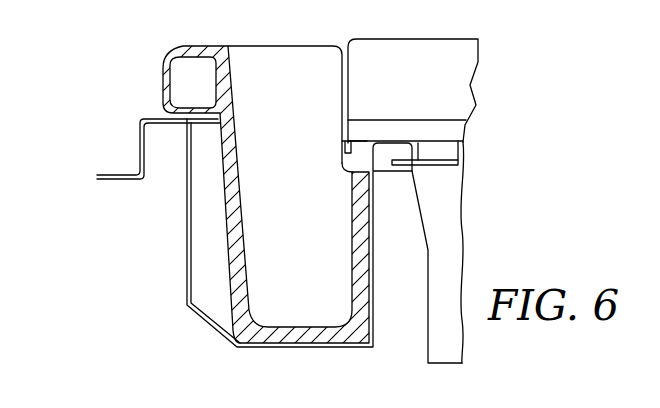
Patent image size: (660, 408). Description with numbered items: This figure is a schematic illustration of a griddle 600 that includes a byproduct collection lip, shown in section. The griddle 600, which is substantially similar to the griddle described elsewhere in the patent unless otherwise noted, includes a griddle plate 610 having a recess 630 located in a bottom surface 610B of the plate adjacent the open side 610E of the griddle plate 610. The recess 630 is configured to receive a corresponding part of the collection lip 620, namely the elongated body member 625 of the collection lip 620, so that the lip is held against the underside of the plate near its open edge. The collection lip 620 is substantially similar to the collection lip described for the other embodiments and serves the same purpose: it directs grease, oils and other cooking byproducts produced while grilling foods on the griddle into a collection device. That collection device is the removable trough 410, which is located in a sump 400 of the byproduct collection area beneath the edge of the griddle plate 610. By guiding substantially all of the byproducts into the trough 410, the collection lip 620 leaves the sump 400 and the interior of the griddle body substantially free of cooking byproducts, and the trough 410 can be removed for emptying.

The sump 400 is at (203, 278).
The removable trough 410 is at (326, 338).
The griddle 600 is at (420, 88).
The griddle plate 610 is at (446, 132).
The bottom surface 610B is at (458, 162).
The open side 610E is at (328, 124).
The collection lip 620 is at (342, 148).
The elongated body member 625 is at (349, 174).
The recess 630 is at (358, 136).